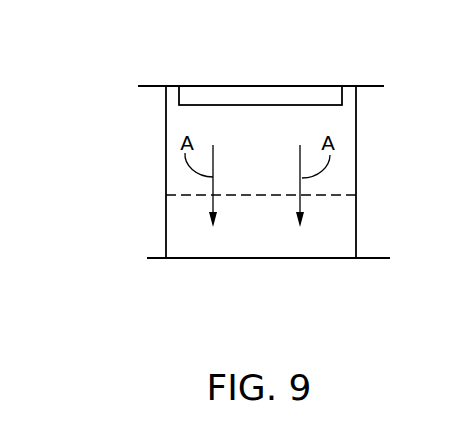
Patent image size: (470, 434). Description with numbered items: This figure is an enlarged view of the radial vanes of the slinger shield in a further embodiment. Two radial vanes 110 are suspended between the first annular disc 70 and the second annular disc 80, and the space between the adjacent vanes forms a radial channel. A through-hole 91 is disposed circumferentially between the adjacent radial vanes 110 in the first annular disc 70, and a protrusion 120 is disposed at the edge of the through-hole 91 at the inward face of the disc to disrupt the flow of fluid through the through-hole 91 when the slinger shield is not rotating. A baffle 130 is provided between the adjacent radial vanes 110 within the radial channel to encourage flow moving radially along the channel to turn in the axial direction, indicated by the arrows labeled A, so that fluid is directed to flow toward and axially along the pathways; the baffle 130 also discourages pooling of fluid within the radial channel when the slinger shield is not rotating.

The first annular disc 70 is at (373, 86).
The second annular disc 80 is at (372, 260).
The through-hole 91 is at (257, 75).
The radial vane 110 is at (166, 142).
The protrusion 120 is at (262, 105).
The baffle 130 is at (282, 197).